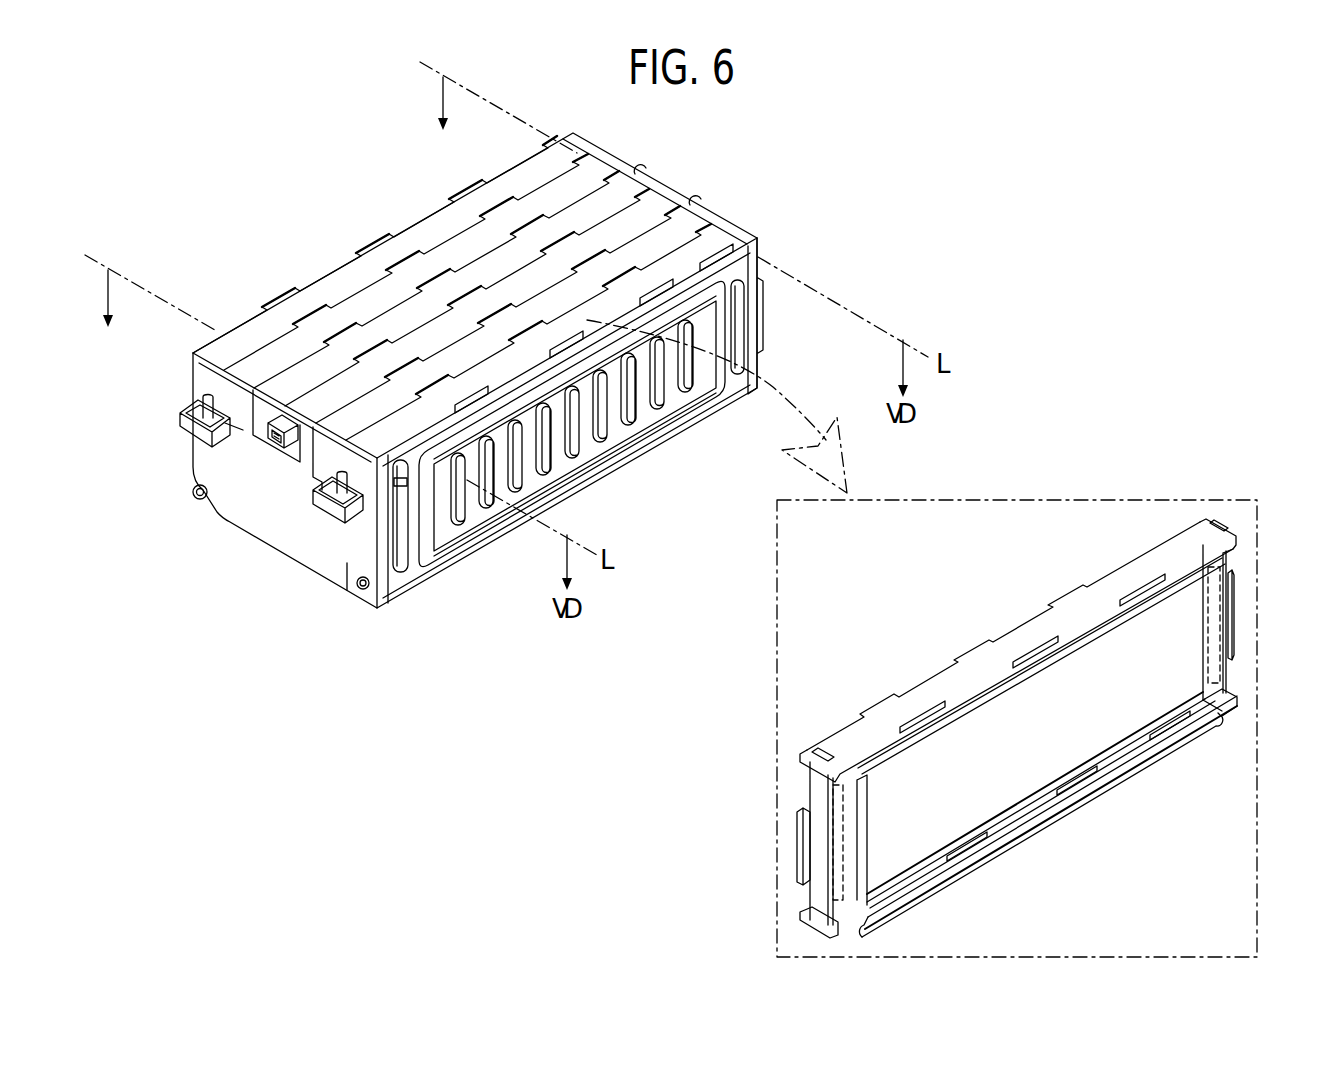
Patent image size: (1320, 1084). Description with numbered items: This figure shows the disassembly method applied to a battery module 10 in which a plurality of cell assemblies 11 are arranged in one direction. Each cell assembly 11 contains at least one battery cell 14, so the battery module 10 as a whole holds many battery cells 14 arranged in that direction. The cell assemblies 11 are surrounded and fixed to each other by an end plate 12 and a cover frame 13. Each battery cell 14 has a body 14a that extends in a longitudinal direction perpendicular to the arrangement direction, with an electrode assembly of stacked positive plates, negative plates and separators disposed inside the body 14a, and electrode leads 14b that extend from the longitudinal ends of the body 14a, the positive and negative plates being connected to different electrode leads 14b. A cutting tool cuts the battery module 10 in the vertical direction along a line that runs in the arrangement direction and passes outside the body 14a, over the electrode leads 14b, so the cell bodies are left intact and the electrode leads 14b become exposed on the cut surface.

The battery module 10 is at (288, 196).
The cell assembly 11 is at (444, 254).
The end plate 12 is at (588, 450).
The cover frame 13 is at (653, 187).
The battery cell 14 is at (1075, 740).
The body 14a is at (1007, 777).
The electrode lead 14b is at (803, 845).